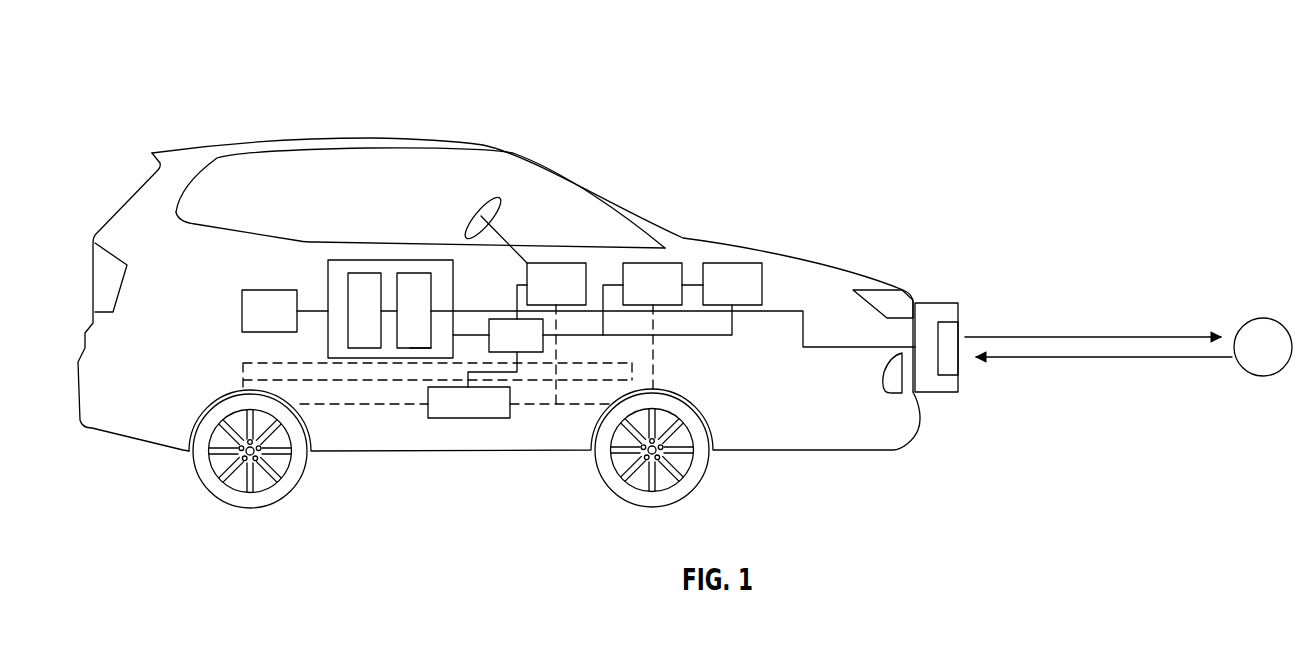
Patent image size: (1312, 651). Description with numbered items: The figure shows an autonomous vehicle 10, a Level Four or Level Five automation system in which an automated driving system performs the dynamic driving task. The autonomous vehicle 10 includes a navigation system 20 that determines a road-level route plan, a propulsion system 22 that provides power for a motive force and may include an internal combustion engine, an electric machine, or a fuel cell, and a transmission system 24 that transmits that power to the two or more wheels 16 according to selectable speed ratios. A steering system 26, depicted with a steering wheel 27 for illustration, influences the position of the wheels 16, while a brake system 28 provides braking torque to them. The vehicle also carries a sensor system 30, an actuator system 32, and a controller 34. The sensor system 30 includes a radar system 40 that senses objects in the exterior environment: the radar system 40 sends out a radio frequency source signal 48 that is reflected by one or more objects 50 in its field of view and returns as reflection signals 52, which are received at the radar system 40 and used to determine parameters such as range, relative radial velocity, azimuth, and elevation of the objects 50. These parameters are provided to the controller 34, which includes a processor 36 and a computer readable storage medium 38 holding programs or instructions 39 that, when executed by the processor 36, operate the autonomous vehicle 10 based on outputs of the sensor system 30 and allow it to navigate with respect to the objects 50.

The autonomous vehicle 10 is at (607, 58).
The wheels 16 is at (288, 492).
The navigation system 20 is at (268, 290).
The propulsion system 22 is at (740, 263).
The transmission system 24 is at (643, 263).
The steering system 26 is at (557, 263).
The steering wheel 27 is at (480, 203).
The brake system 28 is at (465, 418).
The sensor system 30 is at (936, 282).
The actuator system 32 is at (530, 347).
The controller 34 is at (385, 260).
The processor 36 is at (363, 273).
The computer readable storage medium 38 is at (413, 273).
The programs or instructions 39 is at (420, 348).
The radar system 40 is at (945, 375).
The radio frequency source signal 48 is at (1098, 337).
The objects 50 is at (1263, 317).
The reflection signals 52 is at (1100, 358).